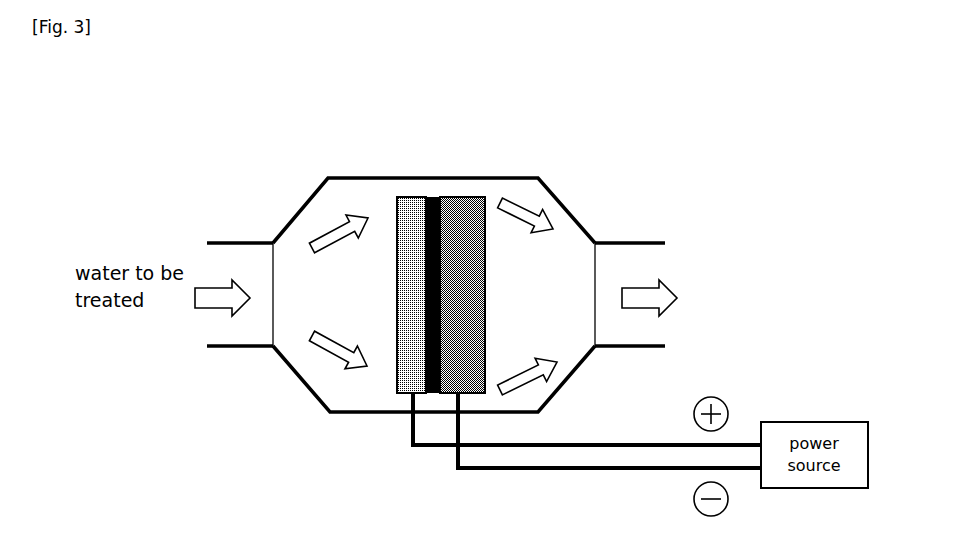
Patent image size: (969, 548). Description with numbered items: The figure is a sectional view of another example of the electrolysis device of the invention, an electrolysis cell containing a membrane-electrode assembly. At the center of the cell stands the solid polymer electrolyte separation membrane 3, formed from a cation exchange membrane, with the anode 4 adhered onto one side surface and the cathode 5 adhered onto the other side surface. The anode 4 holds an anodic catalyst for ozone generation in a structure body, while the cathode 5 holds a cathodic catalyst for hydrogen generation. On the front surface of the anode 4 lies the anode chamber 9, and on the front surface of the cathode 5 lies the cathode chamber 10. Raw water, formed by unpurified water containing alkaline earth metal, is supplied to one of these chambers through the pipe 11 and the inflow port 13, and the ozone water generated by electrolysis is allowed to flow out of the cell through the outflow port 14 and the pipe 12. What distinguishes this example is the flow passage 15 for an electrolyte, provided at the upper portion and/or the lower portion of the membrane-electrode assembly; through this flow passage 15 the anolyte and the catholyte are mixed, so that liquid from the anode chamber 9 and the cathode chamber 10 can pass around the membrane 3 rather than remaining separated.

The solid polymer electrolyte separation membrane 3 is at (433, 193).
The anode 4 is at (413, 207).
The cathode 5 is at (458, 205).
The anode chamber 9 is at (317, 310).
The cathode chamber 10 is at (540, 325).
The pipe 11 is at (223, 242).
The pipe 12 is at (650, 243).
The inflow port 13 is at (278, 260).
The outflow port 14 is at (603, 255).
The flow passage for an electrolyte 15 is at (445, 188).